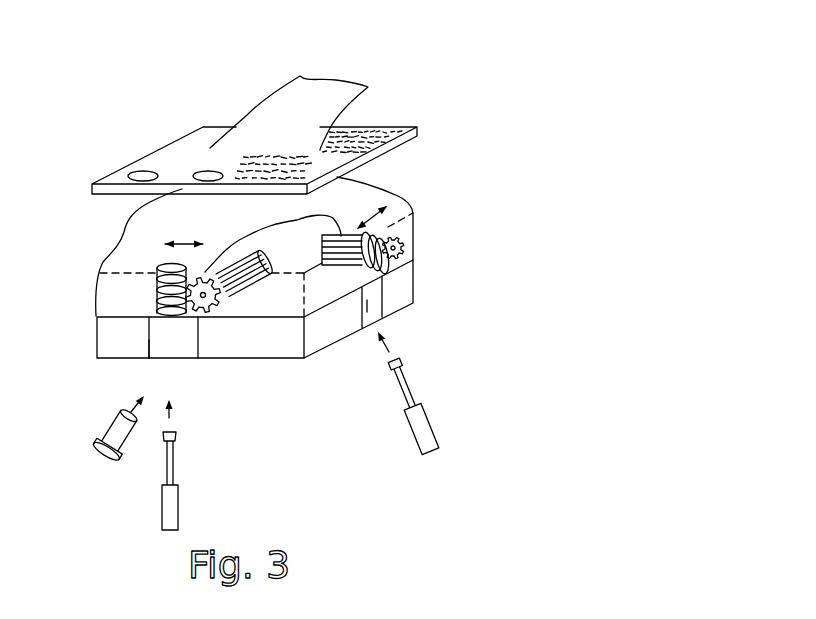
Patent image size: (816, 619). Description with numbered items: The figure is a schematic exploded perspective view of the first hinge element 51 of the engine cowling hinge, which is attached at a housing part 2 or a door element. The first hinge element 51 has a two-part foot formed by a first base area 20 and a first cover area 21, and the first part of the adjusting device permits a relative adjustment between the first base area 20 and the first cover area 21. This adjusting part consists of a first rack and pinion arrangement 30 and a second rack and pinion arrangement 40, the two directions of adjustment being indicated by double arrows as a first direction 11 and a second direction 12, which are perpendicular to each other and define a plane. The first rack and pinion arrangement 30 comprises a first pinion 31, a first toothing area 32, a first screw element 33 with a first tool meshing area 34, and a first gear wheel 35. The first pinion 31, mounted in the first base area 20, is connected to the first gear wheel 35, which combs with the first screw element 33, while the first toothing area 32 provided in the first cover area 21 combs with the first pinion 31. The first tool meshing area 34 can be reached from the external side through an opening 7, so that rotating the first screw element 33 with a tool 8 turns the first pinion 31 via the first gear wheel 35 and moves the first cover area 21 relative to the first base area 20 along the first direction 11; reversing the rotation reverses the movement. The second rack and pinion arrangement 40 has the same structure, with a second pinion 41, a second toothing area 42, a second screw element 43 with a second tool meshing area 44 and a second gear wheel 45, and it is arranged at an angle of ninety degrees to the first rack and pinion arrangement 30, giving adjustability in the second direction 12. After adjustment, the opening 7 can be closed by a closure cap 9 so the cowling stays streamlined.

The housing part 2 is at (108, 337).
The opening 7 is at (149, 357).
The tool 8 is at (163, 513).
The closure cap 9 is at (93, 462).
The first direction 11 is at (117, 247).
The second direction 12 is at (412, 204).
The first base area 20 is at (272, 305).
The first cover area 21 is at (163, 162).
The first rack and pinion arrangement 30 is at (248, 323).
The first pinion 31 is at (242, 252).
The first toothing area 32 is at (243, 160).
The first screw element 33 is at (155, 284).
The first tool meshing area 34 is at (180, 317).
The first gear wheel 35 is at (202, 318).
The second rack and pinion arrangement 40 is at (396, 183).
The second pinion 41 is at (341, 236).
The second toothing area 42 is at (348, 127).
The second screw element 43 is at (392, 262).
The second tool meshing area 44 is at (378, 280).
The second gear wheel 45 is at (398, 235).
The first hinge element 51 is at (291, 86).